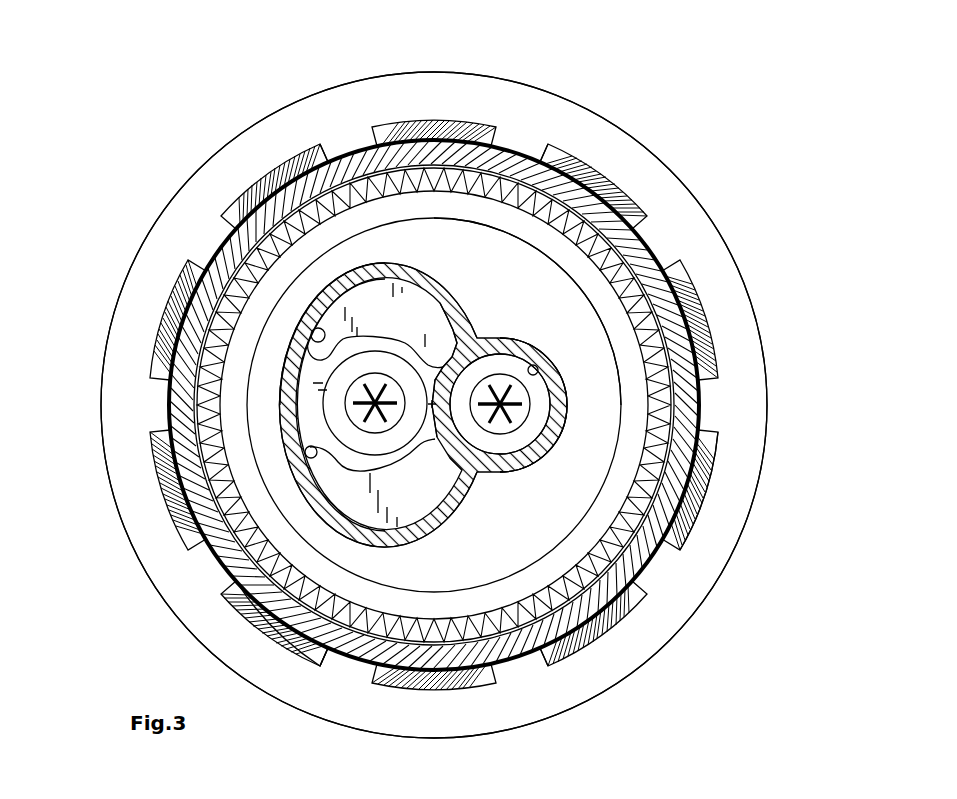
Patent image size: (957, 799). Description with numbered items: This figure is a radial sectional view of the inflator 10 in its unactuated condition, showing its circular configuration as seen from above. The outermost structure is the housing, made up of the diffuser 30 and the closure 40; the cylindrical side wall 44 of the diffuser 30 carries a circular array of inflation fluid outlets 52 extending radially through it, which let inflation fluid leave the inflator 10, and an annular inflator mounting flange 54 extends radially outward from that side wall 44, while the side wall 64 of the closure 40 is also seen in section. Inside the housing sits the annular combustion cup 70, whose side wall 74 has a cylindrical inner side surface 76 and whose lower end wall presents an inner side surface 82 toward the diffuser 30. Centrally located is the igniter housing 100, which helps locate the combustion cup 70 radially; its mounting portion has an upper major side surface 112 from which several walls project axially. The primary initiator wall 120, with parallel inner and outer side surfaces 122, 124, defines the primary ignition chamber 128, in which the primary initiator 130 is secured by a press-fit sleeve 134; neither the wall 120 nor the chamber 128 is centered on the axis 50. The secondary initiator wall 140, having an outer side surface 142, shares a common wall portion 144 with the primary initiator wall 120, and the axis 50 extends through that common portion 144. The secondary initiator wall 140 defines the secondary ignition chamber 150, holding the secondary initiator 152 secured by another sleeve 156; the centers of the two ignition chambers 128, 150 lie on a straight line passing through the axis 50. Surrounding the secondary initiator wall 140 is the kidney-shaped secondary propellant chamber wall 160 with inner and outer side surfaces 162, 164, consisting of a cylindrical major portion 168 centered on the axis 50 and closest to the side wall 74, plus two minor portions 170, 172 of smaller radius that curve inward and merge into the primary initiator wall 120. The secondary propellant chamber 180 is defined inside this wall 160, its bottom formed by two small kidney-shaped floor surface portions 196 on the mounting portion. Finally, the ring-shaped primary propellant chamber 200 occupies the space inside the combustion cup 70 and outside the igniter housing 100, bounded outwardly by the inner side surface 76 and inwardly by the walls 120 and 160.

The inflator 10 is at (741, 159).
The diffuser 30 is at (236, 641).
The closure 40 is at (657, 569).
The side wall 44 is at (300, 653).
The axis 50 is at (490, 335).
The inflation fluid outlets 52 is at (513, 138).
The inflator mounting flange 54 is at (627, 653).
The side wall 64 is at (660, 593).
The combustion cup 70 is at (216, 243).
The side wall 74 is at (360, 187).
The inner side surface 76 is at (290, 207).
The inner side surface 82 is at (620, 480).
The igniter housing 100 is at (417, 672).
The upper major side surface 112 is at (600, 417).
The primary initiator wall 120 is at (557, 370).
The inner side surface 122 is at (538, 365).
The outer side surface 124 is at (566, 403).
The primary ignition chamber 128 is at (578, 381).
The primary initiator 130 is at (526, 447).
The sleeve 134 is at (533, 425).
The secondary initiator wall 140 is at (418, 322).
The outer side surface 142 is at (300, 342).
The common wall portion 144 is at (411, 522).
The secondary ignition chamber 150 is at (343, 440).
The secondary initiator 152 is at (378, 530).
The sleeve 156 is at (333, 481).
The secondary propellant chamber wall 160 is at (482, 298).
The inner side surface 162 is at (303, 327).
The outer side surface 164 is at (314, 312).
The cylindrical major portion 168 is at (330, 410).
The minor portion 170 is at (387, 267).
The minor portion 172 is at (437, 493).
The secondary propellant chamber 180 is at (357, 555).
The floor surface 196 is at (415, 268).
The primary propellant chamber 200 is at (540, 524).